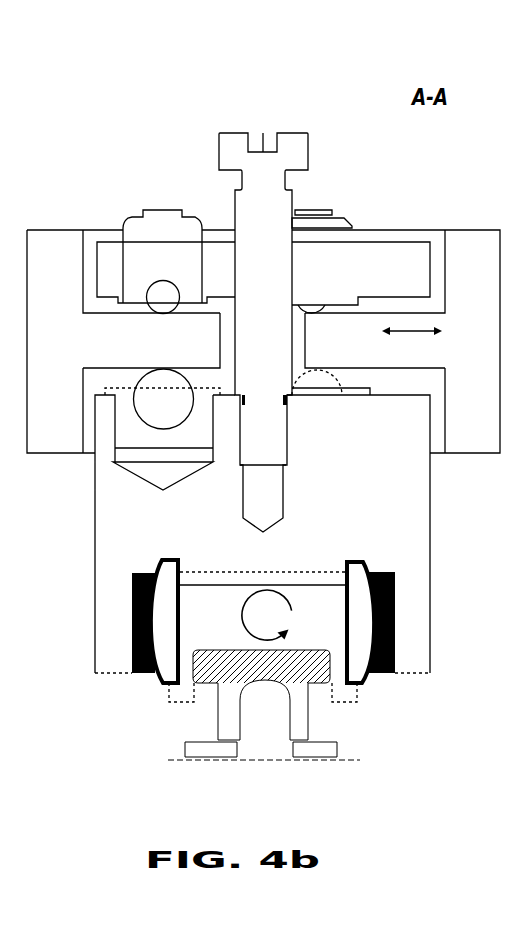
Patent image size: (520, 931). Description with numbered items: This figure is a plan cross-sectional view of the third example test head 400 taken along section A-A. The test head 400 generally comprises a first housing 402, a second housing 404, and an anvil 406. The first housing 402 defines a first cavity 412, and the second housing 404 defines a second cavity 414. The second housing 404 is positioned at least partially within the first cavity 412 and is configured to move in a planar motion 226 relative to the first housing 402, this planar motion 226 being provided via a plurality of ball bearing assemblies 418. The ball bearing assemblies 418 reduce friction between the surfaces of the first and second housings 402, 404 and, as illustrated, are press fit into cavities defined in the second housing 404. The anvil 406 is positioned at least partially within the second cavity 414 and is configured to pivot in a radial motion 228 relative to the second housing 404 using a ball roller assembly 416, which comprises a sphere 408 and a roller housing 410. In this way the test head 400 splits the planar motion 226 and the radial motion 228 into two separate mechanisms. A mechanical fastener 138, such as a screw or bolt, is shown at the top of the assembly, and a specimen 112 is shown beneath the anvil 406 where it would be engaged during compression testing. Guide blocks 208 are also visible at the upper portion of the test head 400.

The third example test head 400 is at (352, 85).
The mechanical fastener 138 is at (264, 133).
The guide block 208 is at (163, 207).
The first housing 402 is at (472, 230).
The first cavity 412 is at (437, 368).
The planar motion 226 is at (412, 333).
The ball bearing assemblies 418 is at (163, 313).
The second housing 404 is at (102, 673).
The ball roller assembly 416 is at (158, 558).
The second cavity 414 is at (282, 570).
The sphere 408 is at (350, 560).
The roller housing 410 is at (390, 572).
The radial motion 228 is at (267, 615).
The anvil 406 is at (185, 702).
The specimen 112 is at (337, 748).